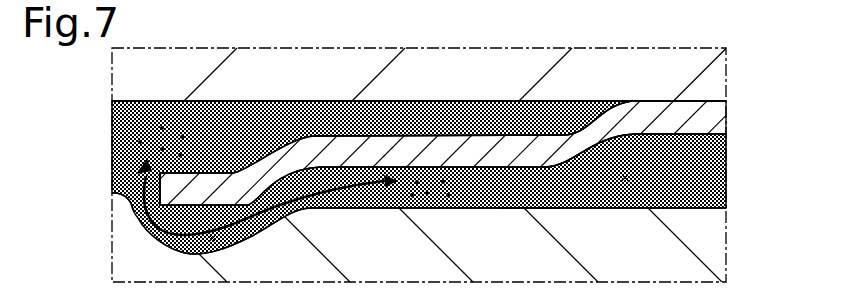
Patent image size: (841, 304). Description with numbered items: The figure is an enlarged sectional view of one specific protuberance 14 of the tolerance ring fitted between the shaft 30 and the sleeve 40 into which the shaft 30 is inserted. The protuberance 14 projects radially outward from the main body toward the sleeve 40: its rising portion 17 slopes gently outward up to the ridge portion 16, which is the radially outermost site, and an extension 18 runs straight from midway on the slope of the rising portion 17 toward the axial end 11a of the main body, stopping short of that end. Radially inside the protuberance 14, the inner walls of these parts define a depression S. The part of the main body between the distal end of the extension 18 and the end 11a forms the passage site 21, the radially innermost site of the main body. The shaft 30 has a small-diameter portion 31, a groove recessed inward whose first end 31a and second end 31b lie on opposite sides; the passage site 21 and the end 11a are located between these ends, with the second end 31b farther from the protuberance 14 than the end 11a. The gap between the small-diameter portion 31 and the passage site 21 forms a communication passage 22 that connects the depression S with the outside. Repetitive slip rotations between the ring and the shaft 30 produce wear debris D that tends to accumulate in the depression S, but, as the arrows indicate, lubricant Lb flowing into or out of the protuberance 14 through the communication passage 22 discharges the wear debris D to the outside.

The end of main body in axial direction 11a is at (158, 184).
The protuberance 14 is at (708, 98).
The ridge portion 16 is at (662, 100).
The rising portion 17 is at (572, 130).
The extension 18 is at (392, 133).
The passage site 21 is at (210, 173).
The communication passage 22 is at (210, 251).
The shaft 30 is at (708, 244).
The small-diameter portion 31 is at (262, 231).
The first end of small-diameter portion 31a is at (333, 199).
The second end of small-diameter portion 31b is at (114, 196).
The sleeve 40 is at (687, 60).
The wear debris D is at (138, 142).
The lubricant Lb is at (538, 207).
The depression S is at (625, 180).